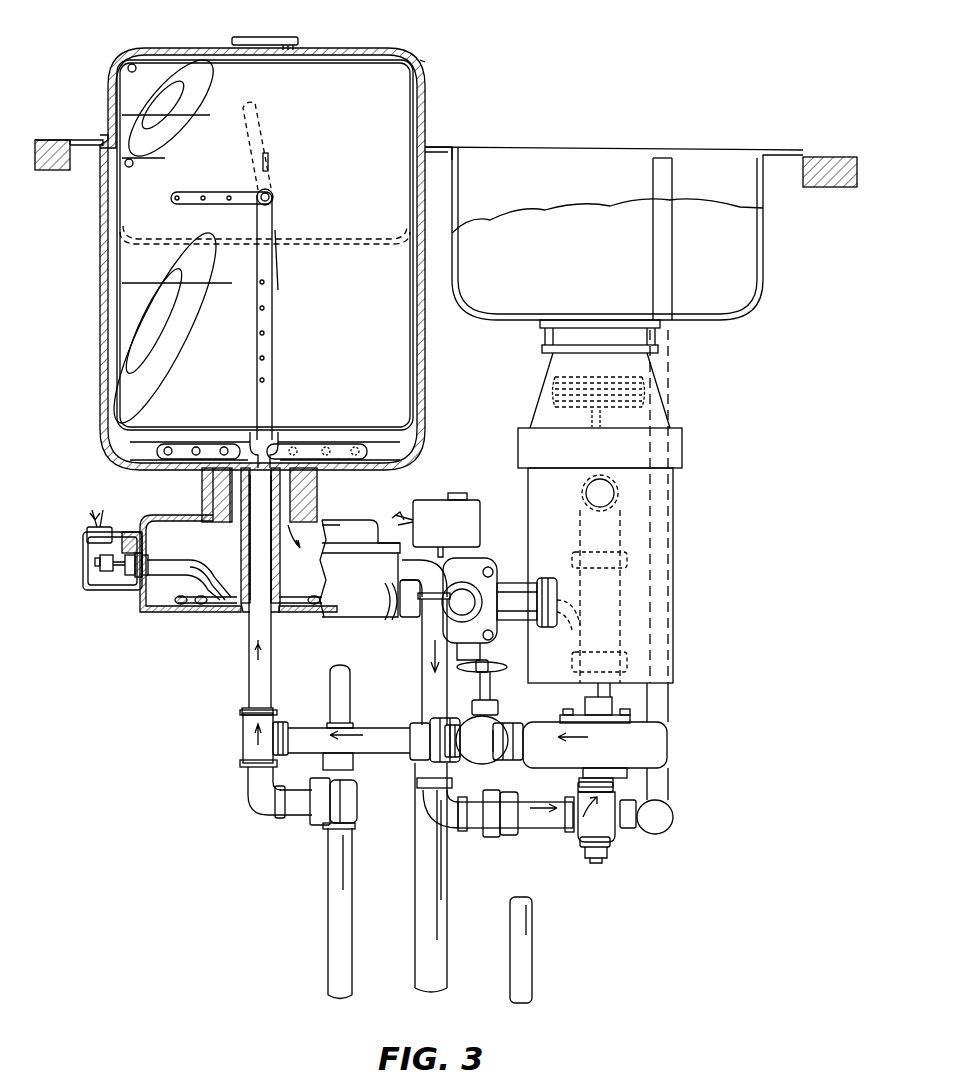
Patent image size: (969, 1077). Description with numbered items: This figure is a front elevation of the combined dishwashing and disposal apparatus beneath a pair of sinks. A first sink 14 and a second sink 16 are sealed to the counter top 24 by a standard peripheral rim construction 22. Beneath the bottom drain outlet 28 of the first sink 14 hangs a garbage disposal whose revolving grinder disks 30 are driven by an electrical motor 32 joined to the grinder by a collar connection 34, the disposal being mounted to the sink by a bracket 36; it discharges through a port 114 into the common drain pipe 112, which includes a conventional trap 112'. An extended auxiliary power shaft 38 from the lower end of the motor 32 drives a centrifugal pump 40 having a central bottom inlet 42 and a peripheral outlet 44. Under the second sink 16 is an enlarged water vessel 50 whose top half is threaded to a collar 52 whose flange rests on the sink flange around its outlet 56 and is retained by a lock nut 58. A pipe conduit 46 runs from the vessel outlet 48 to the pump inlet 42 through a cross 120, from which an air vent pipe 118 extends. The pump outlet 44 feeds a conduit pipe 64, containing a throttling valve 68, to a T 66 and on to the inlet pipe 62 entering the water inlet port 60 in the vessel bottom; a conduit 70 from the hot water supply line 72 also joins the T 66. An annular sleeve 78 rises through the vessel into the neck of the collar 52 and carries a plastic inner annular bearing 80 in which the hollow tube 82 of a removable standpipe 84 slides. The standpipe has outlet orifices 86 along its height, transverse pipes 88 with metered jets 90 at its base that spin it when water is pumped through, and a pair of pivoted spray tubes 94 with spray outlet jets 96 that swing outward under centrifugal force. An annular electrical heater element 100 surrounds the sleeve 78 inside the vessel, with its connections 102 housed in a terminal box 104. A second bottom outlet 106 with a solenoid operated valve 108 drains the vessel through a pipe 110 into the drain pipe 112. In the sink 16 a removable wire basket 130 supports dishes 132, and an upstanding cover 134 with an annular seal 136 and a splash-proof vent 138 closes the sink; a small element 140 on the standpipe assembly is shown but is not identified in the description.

The first sink 14 is at (636, 160).
The second sink 16 is at (405, 300).
The peripheral rim construction 22 is at (68, 138).
The counter top 24 is at (42, 138).
The bottom drain outlet 28 is at (550, 320).
The garbage grinder disks 30 is at (620, 377).
The electrical motor 32 is at (555, 485).
The collar connection 34 is at (535, 428).
The bracket 36 is at (542, 349).
The extended auxiliary power shaft 38 is at (612, 702).
The centrifugal pump 40 is at (560, 758).
The central bottom inlet 42 is at (613, 783).
The peripheral outlet 44 is at (510, 760).
The pipe conduit 46 is at (420, 660).
The outlet 48 is at (395, 570).
The water chamber or vessel 50 is at (360, 620).
The collar 52 is at (312, 492).
The outlet 56 is at (243, 480).
The lock nut 58 is at (205, 488).
The water inlet port 60 is at (246, 612).
The inlet pipe 62 is at (273, 665).
The conduit pipe 64 is at (378, 740).
The T 66 is at (243, 740).
The throttling valve 68 is at (492, 712).
The conduit 70 is at (300, 812).
The hot water supply line 72 is at (330, 700).
The annular sleeve 78 is at (242, 530).
The inner annular bearing 80 is at (240, 566).
The hollow tube 82 is at (270, 440).
The standpipe 84 is at (275, 318).
The outlet orifices 86 is at (266, 358).
The transverse pipes 88 is at (345, 447).
The metered jets 90 is at (168, 447).
The spray tubes 94 is at (247, 194).
The spray outlet jets 96 is at (205, 196).
The annular electrical heater element 100 is at (183, 600).
The connections 102 is at (100, 580).
The terminal box 104 is at (83, 546).
The bottom outlet 106 is at (390, 622).
The solenoid operated valve 108 is at (478, 548).
The pipe 110 is at (515, 592).
The common drain pipe 112 is at (536, 751).
The trap 112' is at (545, 630).
The port 114 is at (618, 488).
The air vent pipe 118 is at (668, 778).
The cross 120 is at (605, 840).
The wire basket 130 is at (117, 345).
The dishes 132 is at (185, 328).
The cover 134 is at (422, 76).
The annular seal 136 is at (427, 142).
The splash-proof vent 138 is at (280, 40).
The tab 140 is at (270, 160).